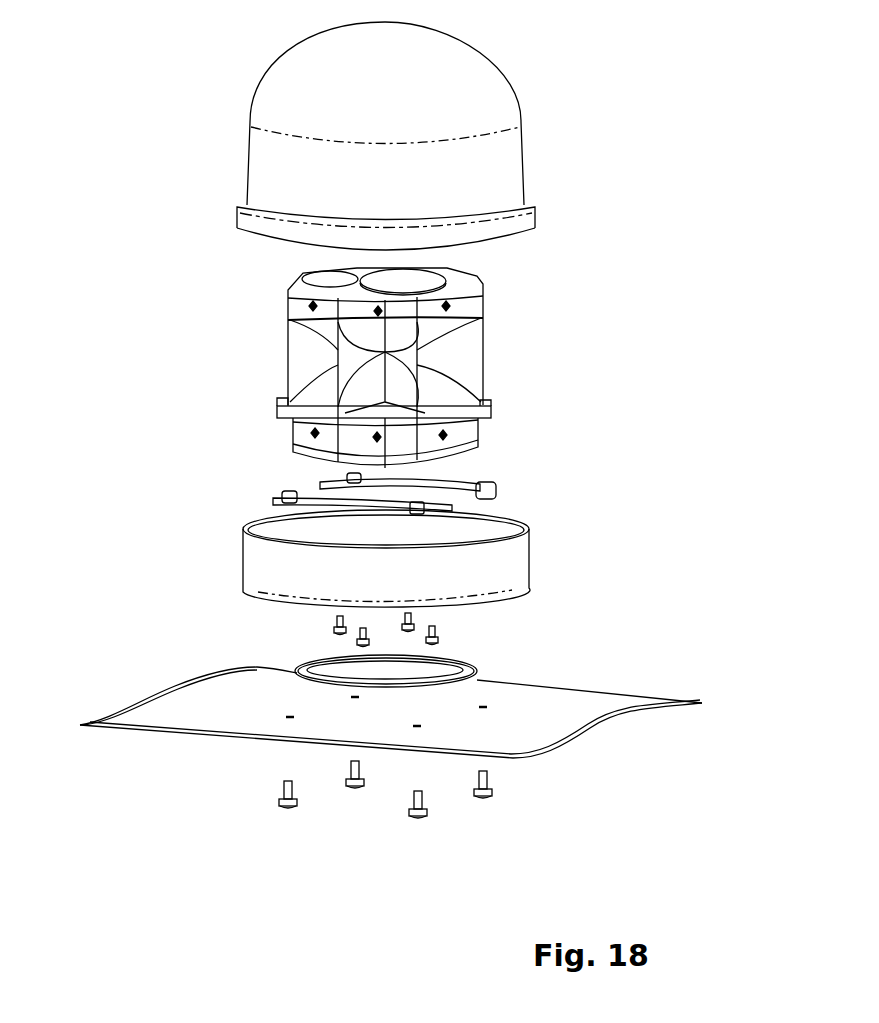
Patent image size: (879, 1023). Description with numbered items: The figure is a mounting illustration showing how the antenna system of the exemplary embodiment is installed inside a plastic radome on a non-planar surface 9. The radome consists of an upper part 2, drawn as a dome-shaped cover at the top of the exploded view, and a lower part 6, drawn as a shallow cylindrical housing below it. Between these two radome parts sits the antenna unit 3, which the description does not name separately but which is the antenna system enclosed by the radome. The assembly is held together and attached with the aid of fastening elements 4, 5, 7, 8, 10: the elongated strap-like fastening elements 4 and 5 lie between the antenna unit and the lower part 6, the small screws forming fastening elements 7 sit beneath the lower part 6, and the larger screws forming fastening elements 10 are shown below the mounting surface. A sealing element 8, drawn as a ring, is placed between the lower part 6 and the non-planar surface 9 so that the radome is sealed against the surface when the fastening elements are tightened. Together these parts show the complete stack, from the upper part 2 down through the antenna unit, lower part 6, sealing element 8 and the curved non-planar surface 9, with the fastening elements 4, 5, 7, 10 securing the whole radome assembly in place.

The upper part 2 is at (498, 183).
The lamp body 3 is at (530, 287).
The fastening element 4 is at (483, 482).
The fastening element 5 is at (495, 493).
The lower part 6 is at (560, 513).
The fastening element 7 is at (435, 628).
The sealing element 8 is at (477, 674).
The non-planar surface 9 is at (563, 703).
The fastening element 10 is at (490, 795).